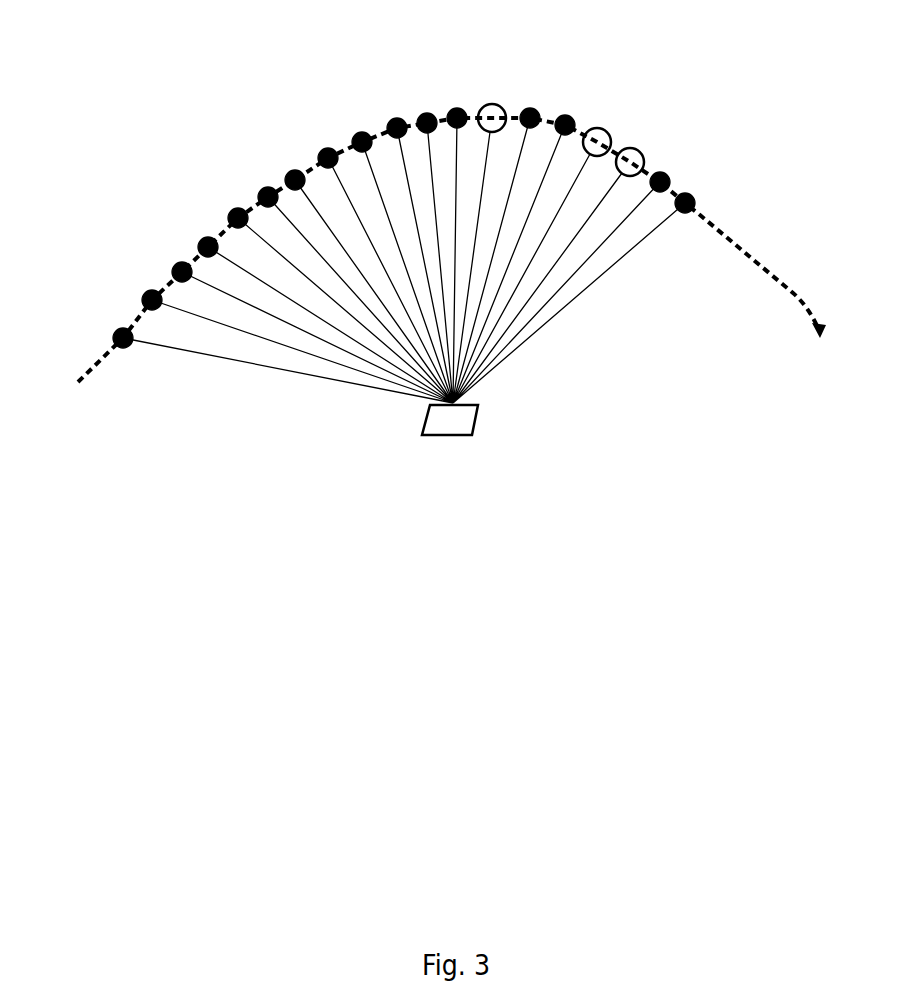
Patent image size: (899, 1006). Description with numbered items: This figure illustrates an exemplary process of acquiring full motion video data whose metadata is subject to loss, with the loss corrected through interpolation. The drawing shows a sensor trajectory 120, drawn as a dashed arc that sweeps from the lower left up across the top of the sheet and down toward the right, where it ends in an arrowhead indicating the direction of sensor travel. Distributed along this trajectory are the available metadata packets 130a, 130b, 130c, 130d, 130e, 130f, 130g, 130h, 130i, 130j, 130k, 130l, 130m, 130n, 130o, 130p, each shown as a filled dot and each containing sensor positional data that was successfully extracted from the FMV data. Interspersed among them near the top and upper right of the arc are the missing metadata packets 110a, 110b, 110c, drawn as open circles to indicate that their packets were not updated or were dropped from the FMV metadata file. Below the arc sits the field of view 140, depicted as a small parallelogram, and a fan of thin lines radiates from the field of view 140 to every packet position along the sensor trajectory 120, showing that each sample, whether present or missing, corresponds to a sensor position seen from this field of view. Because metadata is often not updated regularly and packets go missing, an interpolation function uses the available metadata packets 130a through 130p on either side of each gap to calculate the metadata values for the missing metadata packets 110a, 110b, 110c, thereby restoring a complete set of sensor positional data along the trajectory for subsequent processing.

The missing metadata packet 110a is at (493, 103).
The missing metadata packet 110b is at (608, 122).
The missing metadata packet 110c is at (642, 143).
The sensor trajectory 120 is at (793, 290).
The available metadata packet 130a is at (103, 335).
The available metadata packet 130b is at (137, 295).
The available metadata packet 130c is at (168, 263).
The available metadata packet 130d is at (202, 238).
The available metadata packet 130e is at (230, 202).
The available metadata packet 130f is at (253, 180).
The available metadata packet 130g is at (285, 162).
The available metadata packet 130h is at (320, 145).
The available metadata packet 130i is at (348, 125).
The available metadata packet 130j is at (392, 110).
The available metadata packet 130k is at (415, 103).
The available metadata packet 130l is at (457, 100).
The available metadata packet 130m is at (533, 100).
The available metadata packet 130n is at (573, 103).
The available metadata packet 130o is at (672, 163).
The available metadata packet 130p is at (698, 185).
The field of view 140 is at (470, 445).